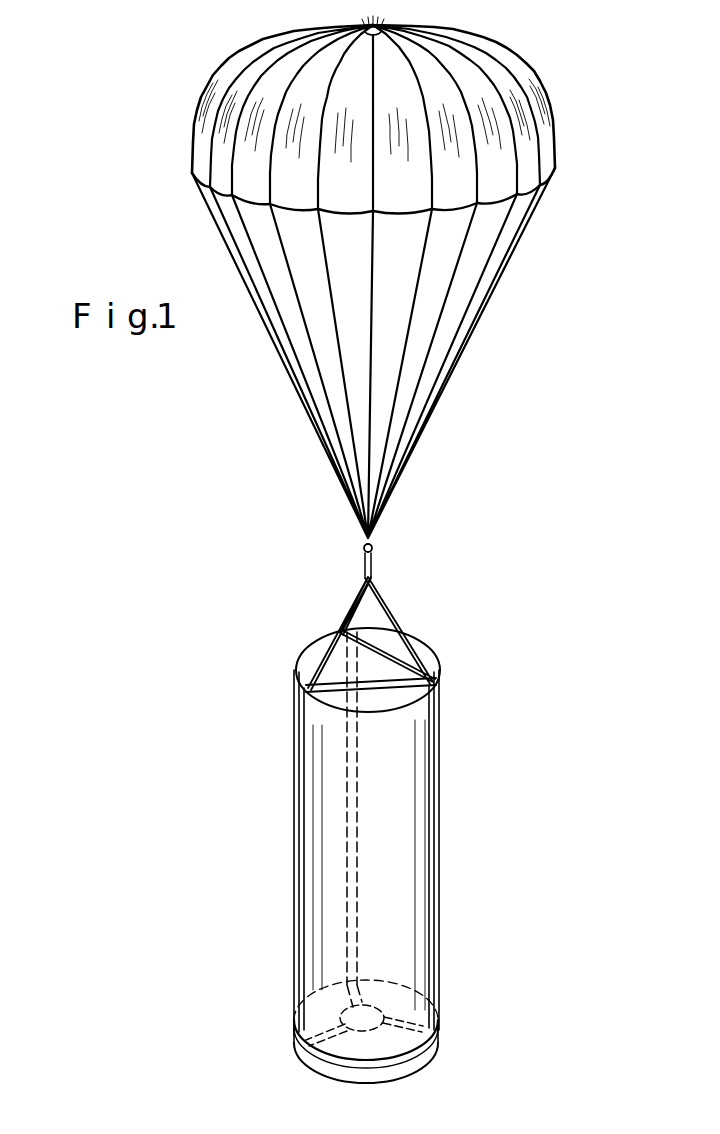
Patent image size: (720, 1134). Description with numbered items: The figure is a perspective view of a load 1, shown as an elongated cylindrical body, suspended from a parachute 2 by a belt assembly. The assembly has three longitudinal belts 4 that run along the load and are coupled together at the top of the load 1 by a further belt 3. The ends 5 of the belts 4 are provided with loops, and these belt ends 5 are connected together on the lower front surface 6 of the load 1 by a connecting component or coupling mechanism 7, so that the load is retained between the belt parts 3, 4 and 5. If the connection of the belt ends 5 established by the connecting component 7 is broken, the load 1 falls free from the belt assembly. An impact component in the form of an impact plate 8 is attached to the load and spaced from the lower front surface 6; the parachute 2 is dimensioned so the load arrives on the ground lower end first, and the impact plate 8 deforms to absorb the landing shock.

The load 1 is at (412, 820).
The parachute 2 is at (528, 107).
The further belt 3 is at (405, 686).
The longitudinal belts 4 is at (391, 783).
The belt ends 5 is at (462, 996).
The lower front surface 6 is at (392, 1041).
The connecting component 7 is at (360, 1017).
The impact plate 8 is at (420, 1064).